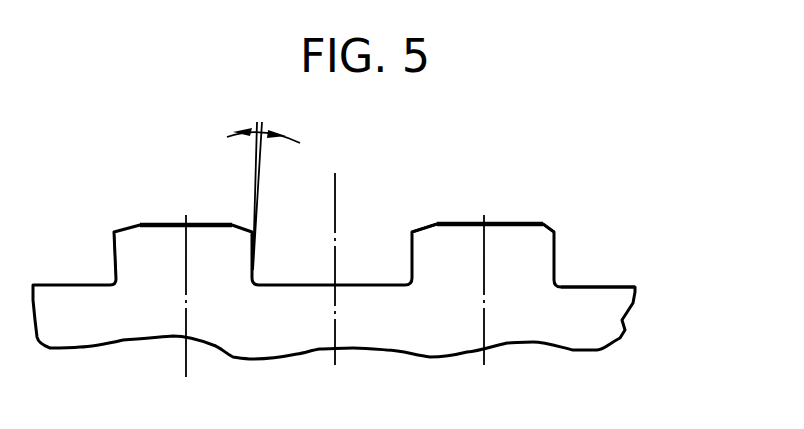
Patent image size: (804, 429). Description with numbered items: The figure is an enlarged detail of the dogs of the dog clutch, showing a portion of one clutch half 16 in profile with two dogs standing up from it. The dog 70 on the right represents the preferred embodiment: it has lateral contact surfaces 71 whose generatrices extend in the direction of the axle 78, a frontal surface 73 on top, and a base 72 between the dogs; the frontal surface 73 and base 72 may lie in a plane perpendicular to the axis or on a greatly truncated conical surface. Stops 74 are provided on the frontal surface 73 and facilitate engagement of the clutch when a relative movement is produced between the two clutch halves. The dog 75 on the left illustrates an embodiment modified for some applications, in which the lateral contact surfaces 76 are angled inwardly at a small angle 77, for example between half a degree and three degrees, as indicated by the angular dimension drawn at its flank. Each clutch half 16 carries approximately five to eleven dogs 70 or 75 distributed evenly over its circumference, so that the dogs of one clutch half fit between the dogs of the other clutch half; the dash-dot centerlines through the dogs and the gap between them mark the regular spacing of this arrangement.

The clutch half 16 is at (275, 345).
The dog 70 is at (497, 222).
The lateral contact surfaces 71 is at (410, 233).
The base 72 is at (608, 284).
The frontal surface 73 is at (449, 223).
The stops 74 is at (542, 223).
The dog 75 is at (166, 215).
The lateral contact surfaces 76 is at (115, 253).
The angle 77 is at (272, 183).
The axle 78 is at (337, 350).